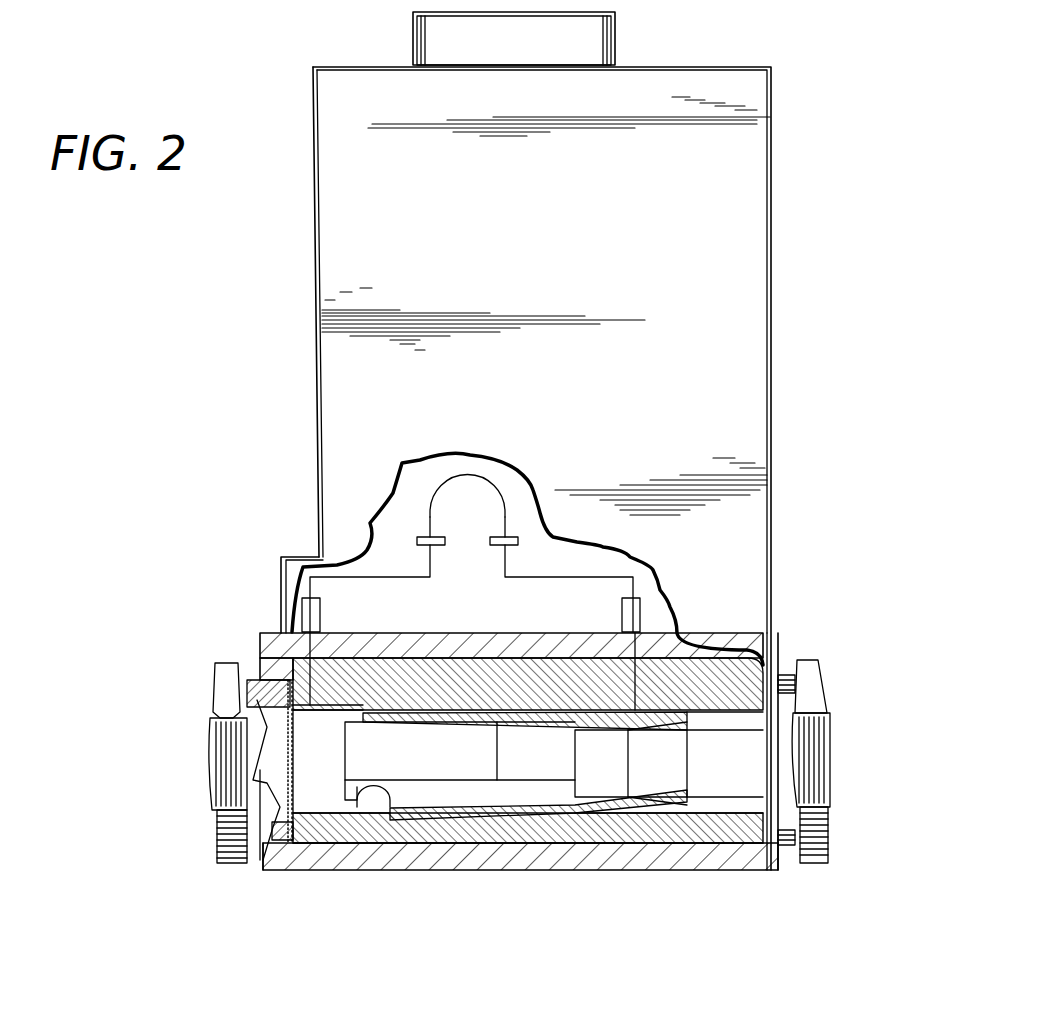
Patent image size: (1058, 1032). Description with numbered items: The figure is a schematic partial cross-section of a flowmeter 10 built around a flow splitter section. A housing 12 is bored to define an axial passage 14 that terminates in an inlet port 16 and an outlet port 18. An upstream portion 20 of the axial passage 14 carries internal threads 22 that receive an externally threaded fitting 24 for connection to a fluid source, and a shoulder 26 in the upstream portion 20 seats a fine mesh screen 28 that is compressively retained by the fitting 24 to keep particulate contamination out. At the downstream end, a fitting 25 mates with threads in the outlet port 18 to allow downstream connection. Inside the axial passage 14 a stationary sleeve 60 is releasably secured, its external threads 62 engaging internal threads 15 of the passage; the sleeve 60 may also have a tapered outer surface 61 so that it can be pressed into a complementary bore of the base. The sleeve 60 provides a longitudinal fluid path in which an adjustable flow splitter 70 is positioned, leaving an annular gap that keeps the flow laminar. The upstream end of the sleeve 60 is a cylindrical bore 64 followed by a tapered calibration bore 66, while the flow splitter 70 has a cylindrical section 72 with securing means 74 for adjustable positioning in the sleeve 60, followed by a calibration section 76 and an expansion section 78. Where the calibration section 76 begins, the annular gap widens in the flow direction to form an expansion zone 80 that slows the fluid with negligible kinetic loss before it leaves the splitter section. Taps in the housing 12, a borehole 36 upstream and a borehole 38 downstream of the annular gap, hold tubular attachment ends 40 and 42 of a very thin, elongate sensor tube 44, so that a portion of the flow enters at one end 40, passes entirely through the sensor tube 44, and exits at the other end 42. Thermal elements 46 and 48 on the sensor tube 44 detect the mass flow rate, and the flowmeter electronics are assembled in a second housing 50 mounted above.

The flowmeter 10 is at (307, 335).
The housing 12 is at (732, 877).
The axial passage 14 is at (310, 782).
The internal threads 15 is at (433, 827).
The inlet port 16 is at (210, 718).
The outlet port 18 is at (837, 678).
The upstream portion 20 is at (307, 857).
The internal threads 22 is at (267, 863).
The externally threaded fitting 24 is at (218, 687).
The fitting 25 is at (830, 850).
The shoulder 26 is at (263, 643).
The fine mesh screen 28 is at (290, 752).
The borehole 36 is at (362, 690).
The borehole 38 is at (637, 683).
The attachment end 40 is at (320, 608).
The attachment end 42 is at (660, 593).
The sensor tube 44 is at (482, 477).
The thermal element 46 is at (417, 540).
The thermal element 48 is at (517, 540).
The second housing 50 is at (317, 397).
The stationary sleeve 60 is at (605, 812).
The outer surface of the sleeve 61 is at (665, 808).
The external threads 62 is at (430, 716).
The cylindrical bore 64 is at (370, 807).
The tapered calibration bore 66 is at (553, 810).
The adjustable flow splitter 70 is at (603, 750).
The cylindrical section 72 is at (420, 722).
The securing means 74 is at (347, 793).
The calibration section 76 is at (517, 767).
The expansion section 78 is at (735, 717).
The expansion zone 80 is at (613, 793).